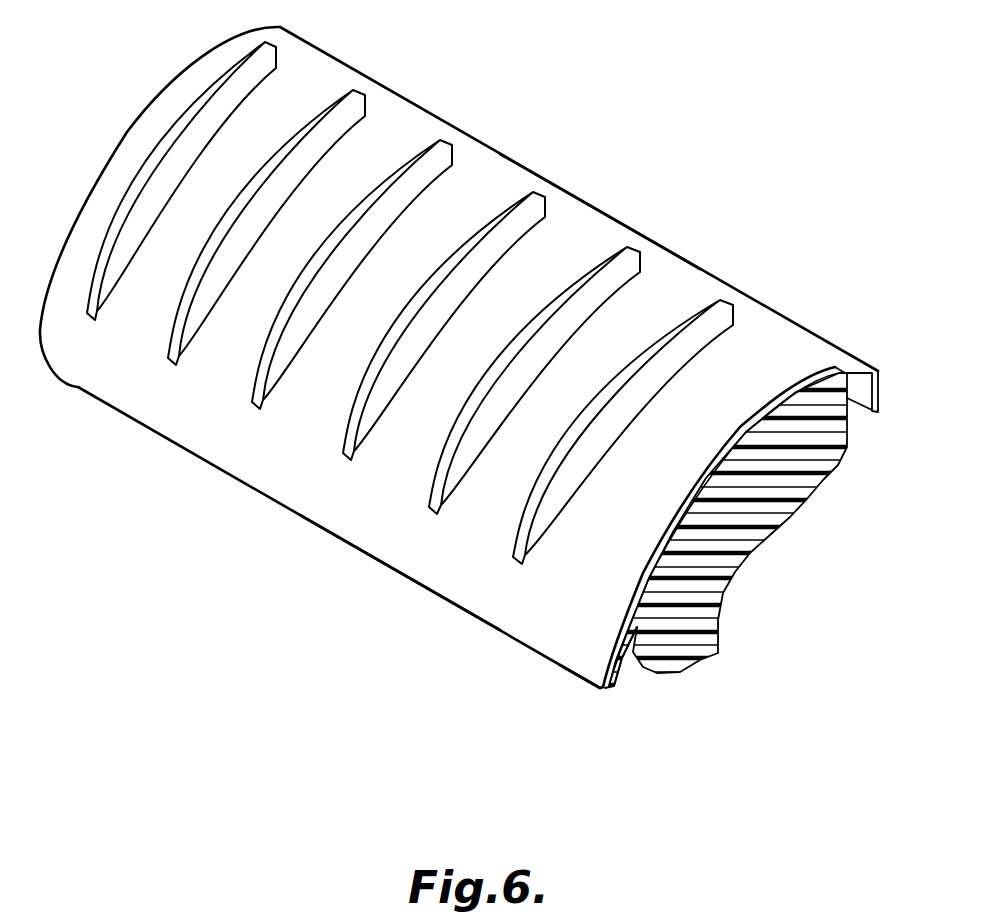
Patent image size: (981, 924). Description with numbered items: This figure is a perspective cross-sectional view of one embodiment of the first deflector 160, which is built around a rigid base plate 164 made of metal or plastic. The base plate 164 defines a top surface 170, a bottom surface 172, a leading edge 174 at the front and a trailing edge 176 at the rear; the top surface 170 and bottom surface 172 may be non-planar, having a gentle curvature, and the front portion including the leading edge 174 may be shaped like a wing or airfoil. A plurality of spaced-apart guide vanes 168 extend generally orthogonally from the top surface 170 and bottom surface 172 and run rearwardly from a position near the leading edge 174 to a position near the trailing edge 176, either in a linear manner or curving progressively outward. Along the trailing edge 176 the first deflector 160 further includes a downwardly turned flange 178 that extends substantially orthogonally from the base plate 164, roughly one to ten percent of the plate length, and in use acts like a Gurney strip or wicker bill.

The first deflector 160 is at (650, 213).
The base plate 164 is at (233, 481).
The guide vanes 168 is at (425, 167).
The top surface 170 is at (450, 580).
The bottom surface 172 is at (633, 652).
The leading edge 174 is at (578, 680).
The trailing edge 176 is at (720, 277).
The flange 178 is at (874, 412).